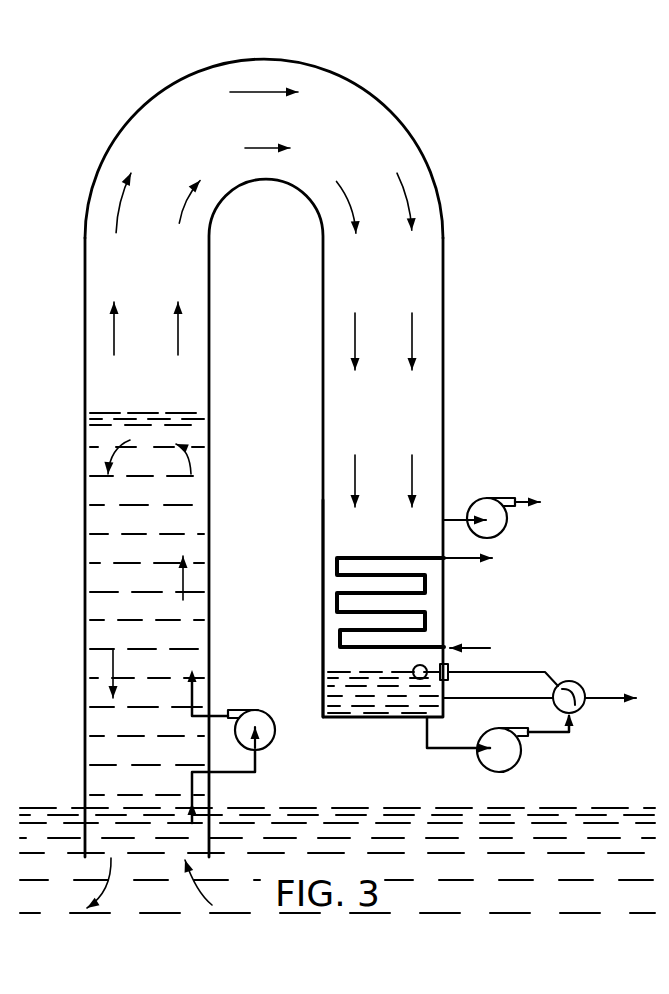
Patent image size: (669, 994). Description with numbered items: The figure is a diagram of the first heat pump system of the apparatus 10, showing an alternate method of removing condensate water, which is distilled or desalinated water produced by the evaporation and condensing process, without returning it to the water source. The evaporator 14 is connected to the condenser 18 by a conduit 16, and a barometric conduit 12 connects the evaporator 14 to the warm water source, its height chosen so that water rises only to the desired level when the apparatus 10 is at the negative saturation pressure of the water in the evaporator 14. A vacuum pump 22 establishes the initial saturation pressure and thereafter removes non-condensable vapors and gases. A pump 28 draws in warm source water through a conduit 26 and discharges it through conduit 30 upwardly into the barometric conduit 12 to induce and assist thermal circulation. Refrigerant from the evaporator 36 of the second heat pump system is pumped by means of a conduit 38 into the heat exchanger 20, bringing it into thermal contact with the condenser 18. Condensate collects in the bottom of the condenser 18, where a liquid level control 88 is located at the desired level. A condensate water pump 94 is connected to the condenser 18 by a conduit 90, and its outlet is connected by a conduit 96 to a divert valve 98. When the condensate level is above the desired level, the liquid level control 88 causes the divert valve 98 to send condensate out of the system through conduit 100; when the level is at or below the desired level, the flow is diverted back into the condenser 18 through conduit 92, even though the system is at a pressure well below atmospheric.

The apparatus 10 is at (418, 68).
The barometric conduit 12 is at (85, 516).
The evaporator 14 is at (207, 413).
The conduit 16 is at (109, 148).
The condenser 18 is at (322, 588).
The heat exchanger 20 is at (338, 629).
The vacuum pump 22 is at (497, 499).
The conduit 26 is at (240, 773).
The pump 28 is at (267, 712).
The conduit 30 is at (222, 716).
The evaporator 36 is at (480, 559).
The conduit 38 is at (470, 648).
The liquid level control 88 is at (440, 678).
The conduit 90 is at (436, 748).
The conduit 92 is at (487, 698).
The condensate water pump 94 is at (514, 765).
The conduit 96 is at (565, 731).
The divert valve 98 is at (572, 684).
The conduit 100 is at (606, 697).